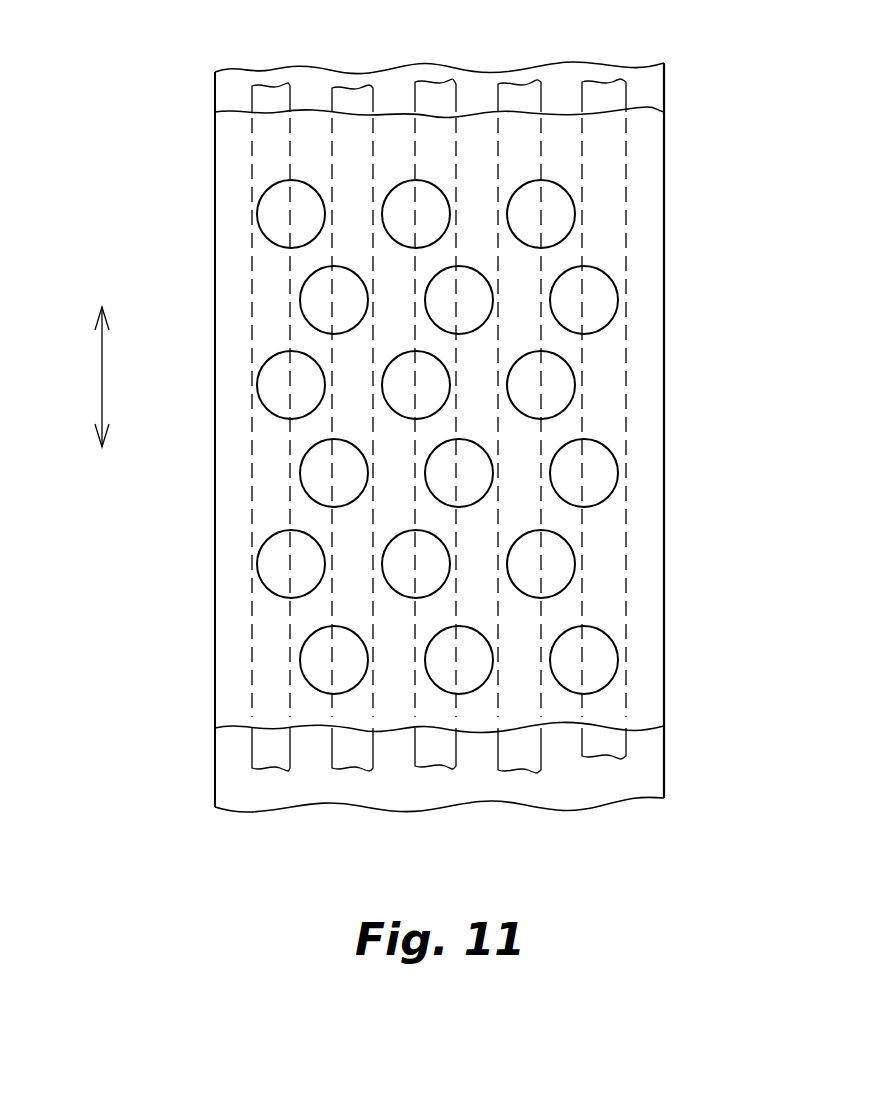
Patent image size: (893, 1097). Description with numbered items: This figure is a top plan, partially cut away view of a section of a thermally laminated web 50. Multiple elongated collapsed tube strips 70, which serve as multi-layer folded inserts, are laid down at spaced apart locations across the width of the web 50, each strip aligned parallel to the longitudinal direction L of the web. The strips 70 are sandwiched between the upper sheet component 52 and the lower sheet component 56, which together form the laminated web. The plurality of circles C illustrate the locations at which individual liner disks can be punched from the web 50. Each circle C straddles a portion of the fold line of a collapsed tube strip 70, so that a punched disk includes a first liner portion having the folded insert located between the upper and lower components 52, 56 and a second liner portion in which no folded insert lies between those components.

The web 50 is at (676, 116).
The upper sheet component 52 is at (655, 606).
The lower sheet component 56 is at (665, 757).
The collapsed tube strips 70 is at (355, 762).
The circles C is at (573, 372).
The longitudinal direction L is at (102, 375).